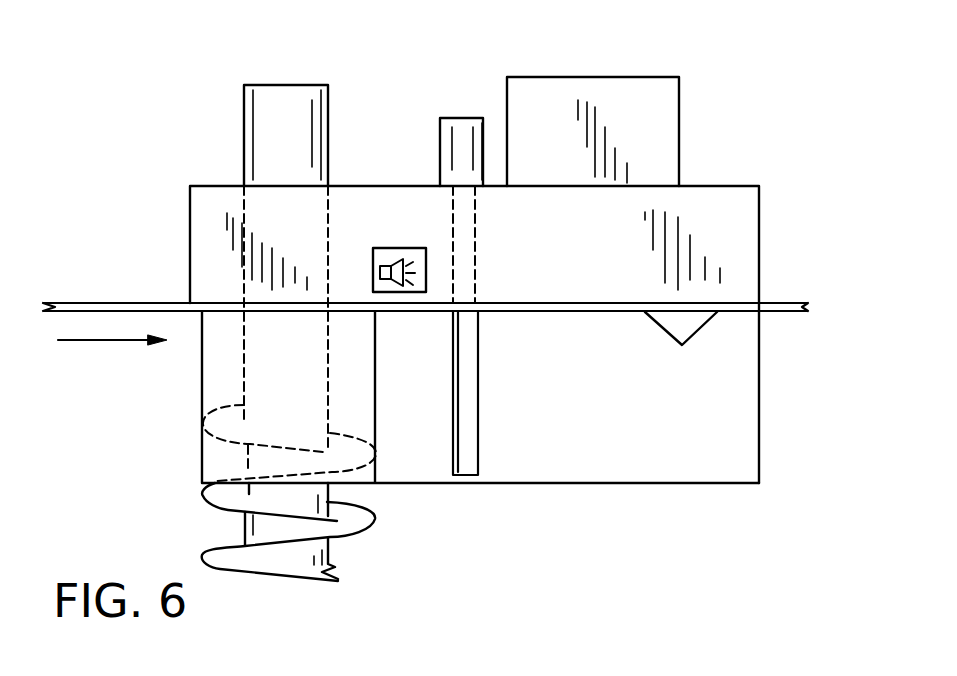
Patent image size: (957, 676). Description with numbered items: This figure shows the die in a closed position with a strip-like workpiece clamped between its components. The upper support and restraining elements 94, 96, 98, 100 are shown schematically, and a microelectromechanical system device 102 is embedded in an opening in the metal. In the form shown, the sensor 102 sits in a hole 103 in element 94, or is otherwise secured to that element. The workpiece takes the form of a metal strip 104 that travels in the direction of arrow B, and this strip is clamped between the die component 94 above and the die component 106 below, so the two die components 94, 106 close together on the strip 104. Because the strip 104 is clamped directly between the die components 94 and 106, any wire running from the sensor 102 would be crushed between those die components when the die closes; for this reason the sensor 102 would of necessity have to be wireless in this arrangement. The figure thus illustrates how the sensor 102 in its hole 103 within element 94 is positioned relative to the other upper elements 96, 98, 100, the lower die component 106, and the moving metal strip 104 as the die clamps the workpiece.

The upper support and restraining element 94 is at (737, 228).
The upper support and restraining element 96 is at (668, 113).
The upper support and restraining element 98 is at (474, 121).
The upper support and restraining element 100 is at (248, 167).
The microelectromechanical system device 102 is at (390, 263).
The hole 103 is at (398, 252).
The metal strip 104 is at (127, 302).
The die component 106 is at (758, 408).
The arrow B is at (108, 340).